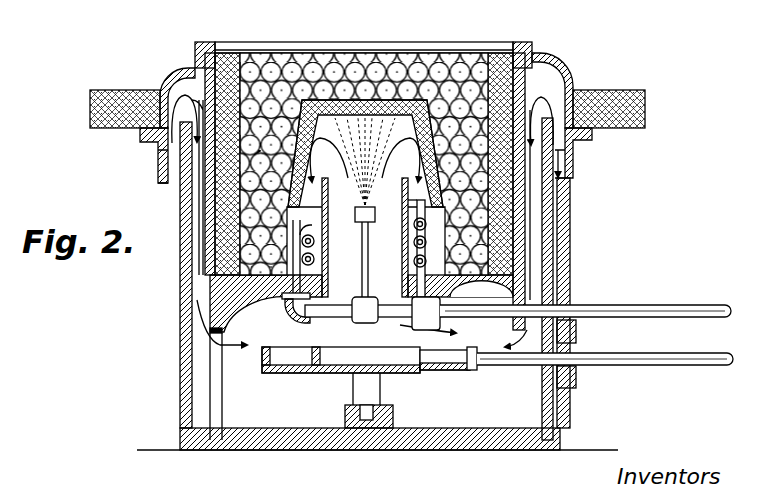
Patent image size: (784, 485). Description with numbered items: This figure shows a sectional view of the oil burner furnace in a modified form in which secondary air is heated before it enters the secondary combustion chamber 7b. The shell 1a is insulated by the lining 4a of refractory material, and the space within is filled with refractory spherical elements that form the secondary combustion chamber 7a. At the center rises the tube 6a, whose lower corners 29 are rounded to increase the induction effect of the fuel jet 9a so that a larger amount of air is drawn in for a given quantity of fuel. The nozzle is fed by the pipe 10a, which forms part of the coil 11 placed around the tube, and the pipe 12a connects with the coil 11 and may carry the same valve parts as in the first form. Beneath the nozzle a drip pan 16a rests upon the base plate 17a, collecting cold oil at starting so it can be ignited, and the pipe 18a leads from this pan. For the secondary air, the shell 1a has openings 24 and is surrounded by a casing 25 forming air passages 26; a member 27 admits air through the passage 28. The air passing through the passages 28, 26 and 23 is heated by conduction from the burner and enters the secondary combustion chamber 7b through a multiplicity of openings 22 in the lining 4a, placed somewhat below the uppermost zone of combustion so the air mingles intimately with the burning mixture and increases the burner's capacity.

The shell 1a is at (207, 98).
The lining 4a is at (530, 60).
The secondary combustion chamber 7a is at (340, 105).
The secondary combustion chamber 7b is at (360, 68).
The member 27 is at (570, 84).
The passage 28 is at (170, 153).
The air passages 26 is at (197, 167).
The casing 25 is at (200, 250).
The openings 24 is at (207, 266).
The air passages 23 is at (183, 318).
The openings 22 is at (220, 185).
The lower corners 29 is at (291, 306).
The tube 6a is at (363, 236).
The fuel jet 9a is at (413, 232).
The coil 11 is at (424, 258).
The pipe 10a is at (343, 327).
The pipe 12a is at (667, 308).
The drip pan 16a is at (303, 372).
The base plate 17a is at (305, 433).
The pipe 18a is at (652, 363).